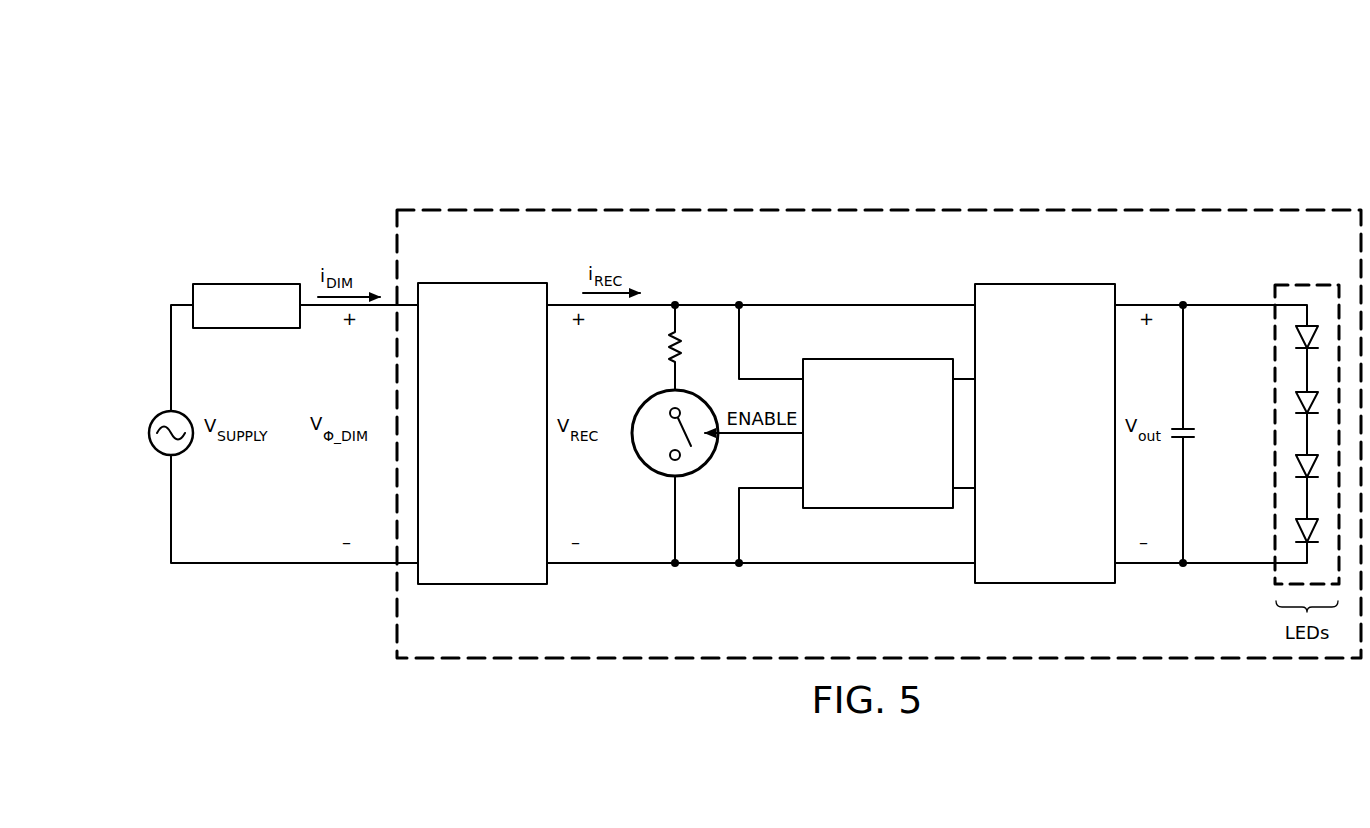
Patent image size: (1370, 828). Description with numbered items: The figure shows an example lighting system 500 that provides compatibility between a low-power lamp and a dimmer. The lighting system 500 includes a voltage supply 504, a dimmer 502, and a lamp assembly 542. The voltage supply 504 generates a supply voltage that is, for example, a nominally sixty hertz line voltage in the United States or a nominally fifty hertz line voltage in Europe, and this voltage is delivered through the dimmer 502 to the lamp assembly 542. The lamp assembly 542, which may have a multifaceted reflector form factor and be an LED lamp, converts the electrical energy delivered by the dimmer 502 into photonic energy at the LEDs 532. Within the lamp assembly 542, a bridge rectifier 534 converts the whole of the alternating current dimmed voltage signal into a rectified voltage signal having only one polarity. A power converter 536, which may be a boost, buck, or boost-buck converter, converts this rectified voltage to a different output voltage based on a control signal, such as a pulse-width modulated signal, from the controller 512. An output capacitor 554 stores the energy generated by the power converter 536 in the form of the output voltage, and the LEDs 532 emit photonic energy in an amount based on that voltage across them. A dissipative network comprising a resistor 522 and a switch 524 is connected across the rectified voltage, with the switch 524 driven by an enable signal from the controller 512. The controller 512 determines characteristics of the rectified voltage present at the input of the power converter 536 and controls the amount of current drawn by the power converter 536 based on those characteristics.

The lighting system 500 is at (418, 100).
The dimmer 502 is at (245, 284).
The voltage supply 504 is at (156, 418).
The controller 512 is at (860, 467).
The resistor 522 is at (668, 344).
The switch 524 is at (650, 472).
The LEDs 532 is at (1309, 283).
The bridge rectifier 534 is at (464, 477).
The power converter 536 is at (1027, 479).
The lamp assembly 542 is at (893, 208).
The output capacitor 554 is at (1197, 434).